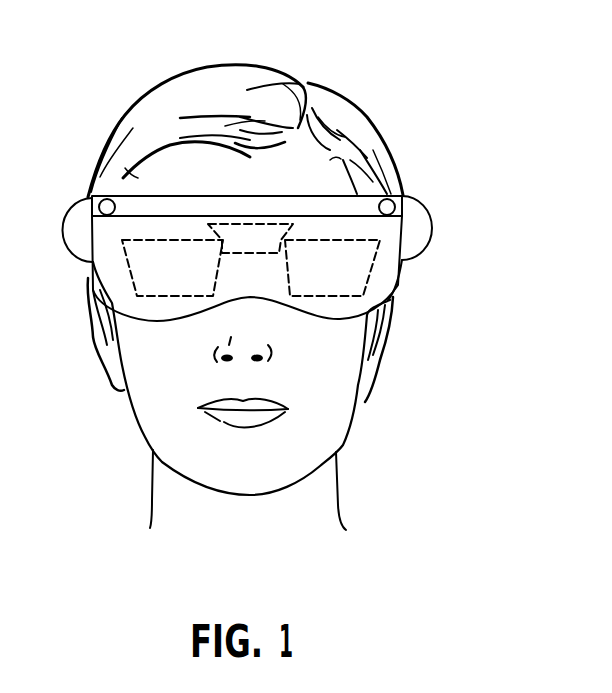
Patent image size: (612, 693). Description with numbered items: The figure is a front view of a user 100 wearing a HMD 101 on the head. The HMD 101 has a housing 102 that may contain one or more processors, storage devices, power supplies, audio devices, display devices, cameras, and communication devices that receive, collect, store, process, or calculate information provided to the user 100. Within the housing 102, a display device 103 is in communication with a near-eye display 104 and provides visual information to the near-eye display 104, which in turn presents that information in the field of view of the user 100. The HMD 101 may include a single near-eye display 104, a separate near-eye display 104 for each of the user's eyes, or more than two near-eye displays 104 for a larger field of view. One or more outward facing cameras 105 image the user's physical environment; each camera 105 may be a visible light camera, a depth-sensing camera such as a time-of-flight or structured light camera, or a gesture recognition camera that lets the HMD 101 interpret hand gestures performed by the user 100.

The user 100 is at (415, 53).
The HMD 101 is at (444, 106).
The housing 102 is at (442, 169).
The display device 103 is at (293, 226).
The near-eye display 104 is at (373, 269).
The outward facing camera 105 is at (395, 204).